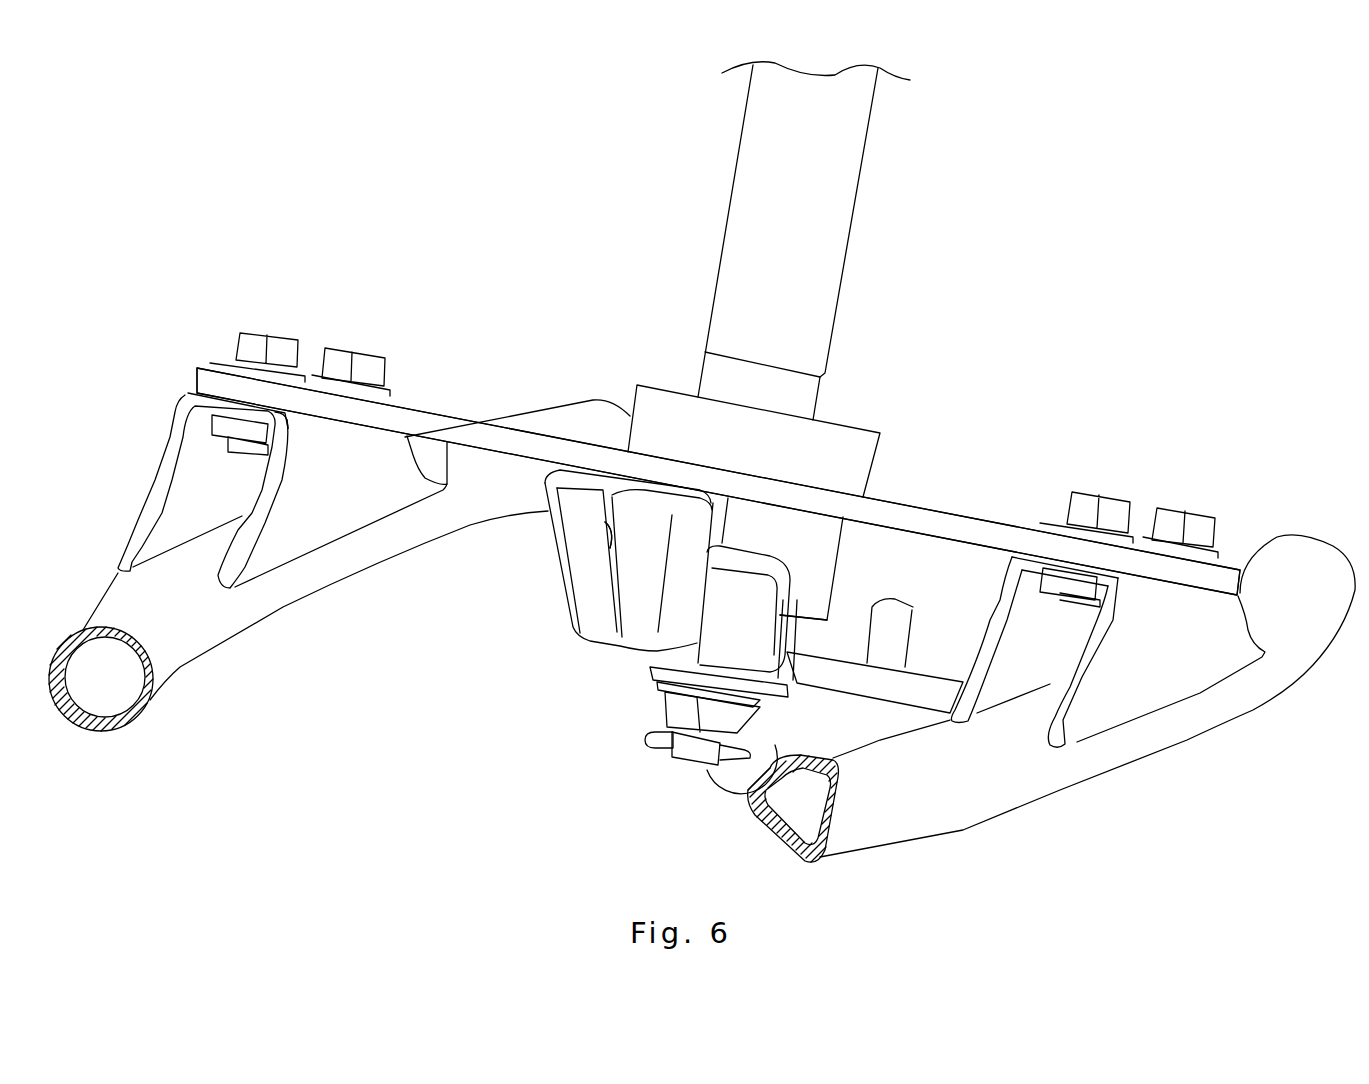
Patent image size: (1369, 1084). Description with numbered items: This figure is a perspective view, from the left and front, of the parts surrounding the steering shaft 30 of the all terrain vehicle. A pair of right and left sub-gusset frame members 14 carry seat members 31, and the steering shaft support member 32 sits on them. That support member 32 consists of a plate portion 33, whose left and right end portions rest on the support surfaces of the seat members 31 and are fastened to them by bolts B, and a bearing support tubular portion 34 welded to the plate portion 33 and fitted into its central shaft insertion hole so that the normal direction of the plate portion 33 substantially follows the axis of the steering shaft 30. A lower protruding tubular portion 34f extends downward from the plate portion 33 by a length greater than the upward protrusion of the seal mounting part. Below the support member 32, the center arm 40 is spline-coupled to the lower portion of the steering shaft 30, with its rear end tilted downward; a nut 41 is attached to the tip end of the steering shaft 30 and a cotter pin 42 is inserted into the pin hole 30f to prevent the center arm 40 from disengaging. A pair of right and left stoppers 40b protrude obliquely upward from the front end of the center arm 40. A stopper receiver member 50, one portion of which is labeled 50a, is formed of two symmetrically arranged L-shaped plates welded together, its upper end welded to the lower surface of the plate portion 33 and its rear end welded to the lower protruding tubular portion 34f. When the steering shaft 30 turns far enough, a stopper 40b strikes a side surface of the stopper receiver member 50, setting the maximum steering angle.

The sub-gusset frame members 14 is at (183, 668).
The steering shaft 30 is at (863, 172).
The pin hole 30f is at (693, 757).
The seat members 31 is at (160, 485).
The steering shaft support member 32 is at (988, 521).
The plate portion 33 is at (445, 414).
The bearing support tubular portion 34 is at (881, 432).
The lower protruding tubular portion 34f is at (837, 558).
The center arm 40 is at (822, 677).
The stoppers 40b is at (733, 613).
The nut 41 is at (667, 707).
The cotter pin 42 is at (657, 747).
The stopper receiver member 50 is at (553, 532).
The slit of cushion rubber 50a is at (618, 600).
The bolts B is at (368, 358).